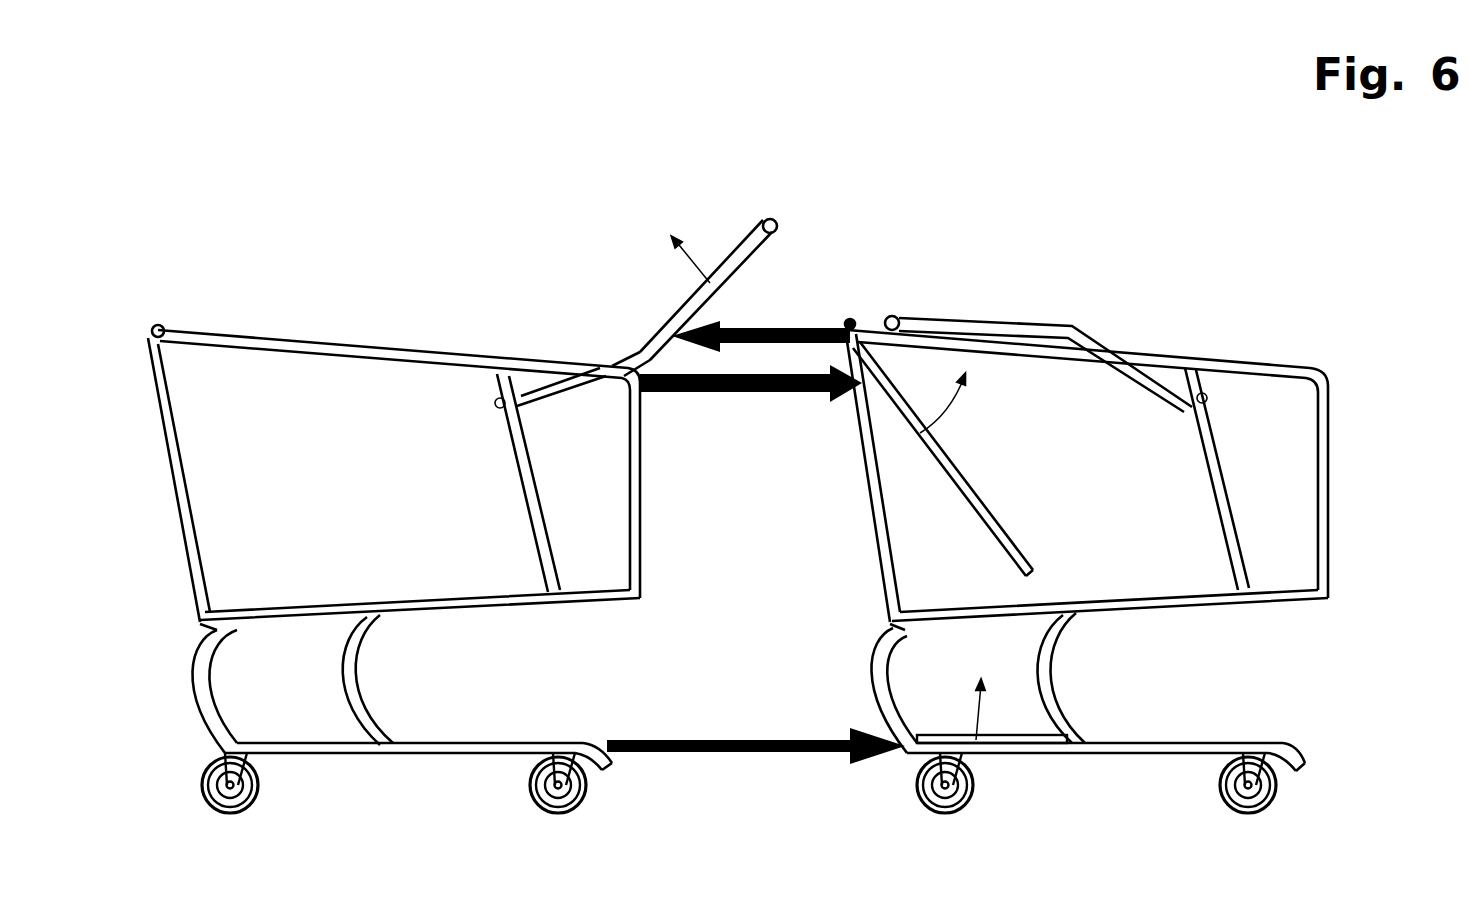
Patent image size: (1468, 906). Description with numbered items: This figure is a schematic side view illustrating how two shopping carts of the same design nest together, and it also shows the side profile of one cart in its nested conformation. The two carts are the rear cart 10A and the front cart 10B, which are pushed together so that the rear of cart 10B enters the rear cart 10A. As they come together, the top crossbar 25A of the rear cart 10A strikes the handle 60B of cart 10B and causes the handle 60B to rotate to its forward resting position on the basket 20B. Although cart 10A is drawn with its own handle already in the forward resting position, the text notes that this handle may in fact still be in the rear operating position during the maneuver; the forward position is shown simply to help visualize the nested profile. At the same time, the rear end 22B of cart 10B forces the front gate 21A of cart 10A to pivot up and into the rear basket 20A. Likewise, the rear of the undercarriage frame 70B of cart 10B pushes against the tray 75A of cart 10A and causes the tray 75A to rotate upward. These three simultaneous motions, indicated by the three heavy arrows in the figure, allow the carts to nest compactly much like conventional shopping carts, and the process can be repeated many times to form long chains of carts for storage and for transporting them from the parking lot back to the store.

The rear shopping cart 10A is at (1068, 252).
The front shopping cart 10B is at (382, 255).
The rear basket 20A is at (1173, 550).
The basket 20B is at (306, 573).
The front gate 21A is at (978, 497).
The rear end 22B is at (657, 402).
The top crossbar 25A is at (852, 310).
The handle 60B is at (708, 205).
The undercarriage frame 70B is at (590, 680).
The tray 75A is at (1003, 735).